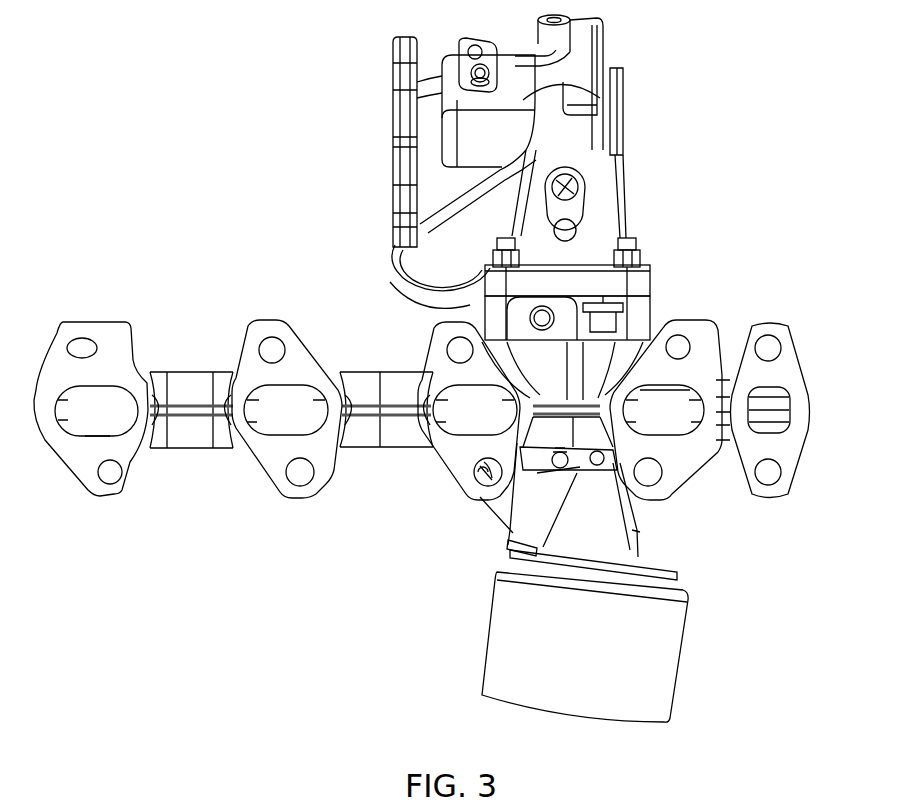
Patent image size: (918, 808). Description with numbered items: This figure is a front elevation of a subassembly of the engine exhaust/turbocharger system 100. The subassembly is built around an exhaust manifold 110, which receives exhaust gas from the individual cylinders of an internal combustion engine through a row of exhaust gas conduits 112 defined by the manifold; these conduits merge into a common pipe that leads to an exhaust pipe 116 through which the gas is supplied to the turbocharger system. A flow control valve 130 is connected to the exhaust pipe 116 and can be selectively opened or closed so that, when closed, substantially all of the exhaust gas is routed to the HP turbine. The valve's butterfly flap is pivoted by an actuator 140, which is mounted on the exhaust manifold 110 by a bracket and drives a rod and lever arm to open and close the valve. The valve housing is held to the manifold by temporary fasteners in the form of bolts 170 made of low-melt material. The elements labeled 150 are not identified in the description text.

The engine exhaust/turbocharger system 100 is at (247, 184).
The exhaust manifold 110 is at (92, 326).
The exhaust gas conduits 112 is at (127, 419).
The exhaust pipe 116 is at (625, 345).
The flow control valve 130 is at (488, 314).
The actuator 140 is at (500, 613).
The fastener 150 is at (497, 244).
The bolts 170 is at (600, 314).